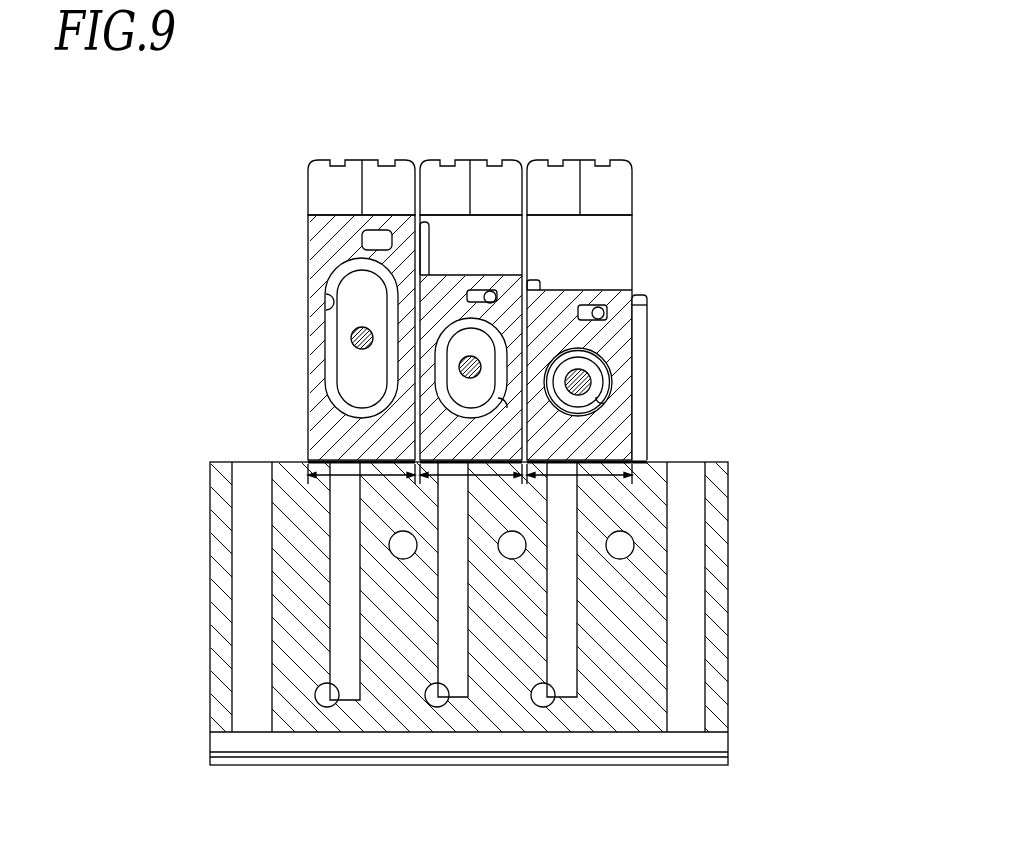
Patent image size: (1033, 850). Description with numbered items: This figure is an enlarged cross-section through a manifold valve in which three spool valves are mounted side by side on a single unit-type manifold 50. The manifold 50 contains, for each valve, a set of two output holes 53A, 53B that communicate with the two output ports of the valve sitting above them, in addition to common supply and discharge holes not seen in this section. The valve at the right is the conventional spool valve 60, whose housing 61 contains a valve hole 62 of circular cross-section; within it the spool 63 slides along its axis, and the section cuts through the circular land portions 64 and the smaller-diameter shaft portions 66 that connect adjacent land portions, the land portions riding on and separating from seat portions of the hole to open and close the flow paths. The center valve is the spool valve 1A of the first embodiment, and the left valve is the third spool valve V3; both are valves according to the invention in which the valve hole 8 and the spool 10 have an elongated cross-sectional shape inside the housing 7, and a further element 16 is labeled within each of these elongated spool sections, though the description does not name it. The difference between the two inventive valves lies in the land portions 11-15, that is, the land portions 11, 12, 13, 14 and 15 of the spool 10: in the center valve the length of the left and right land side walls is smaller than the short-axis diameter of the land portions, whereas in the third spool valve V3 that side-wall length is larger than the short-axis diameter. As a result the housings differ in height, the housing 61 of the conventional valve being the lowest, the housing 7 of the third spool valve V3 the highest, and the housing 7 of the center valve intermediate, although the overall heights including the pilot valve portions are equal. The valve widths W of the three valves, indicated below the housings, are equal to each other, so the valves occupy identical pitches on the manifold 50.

The spool valve of the first embodiment 1A is at (470, 129).
The conventional spool valve 60 is at (599, 130).
The housing 7 is at (328, 250).
The valve hole 8 is at (326, 300).
The spool 10 is at (340, 253).
The land portions 11-15 is at (346, 339).
The land portion 11 is at (346, 339).
The land portion 12 is at (346, 339).
The land portion 13 is at (346, 339).
The land portion 14 is at (346, 339).
The land portion 15 is at (463, 392).
The passage 16 is at (351, 337).
The housing 61 is at (607, 340).
The valve hole 62 is at (605, 401).
The spool 63 is at (578, 342).
The land portions 64 is at (603, 384).
The shaft portions 66 is at (604, 358).
The manifold 50 is at (720, 590).
The output hole 53A is at (403, 547).
The output hole 53B is at (327, 697).
The valve width W is at (347, 476).
The third spool valve V3 is at (348, 130).